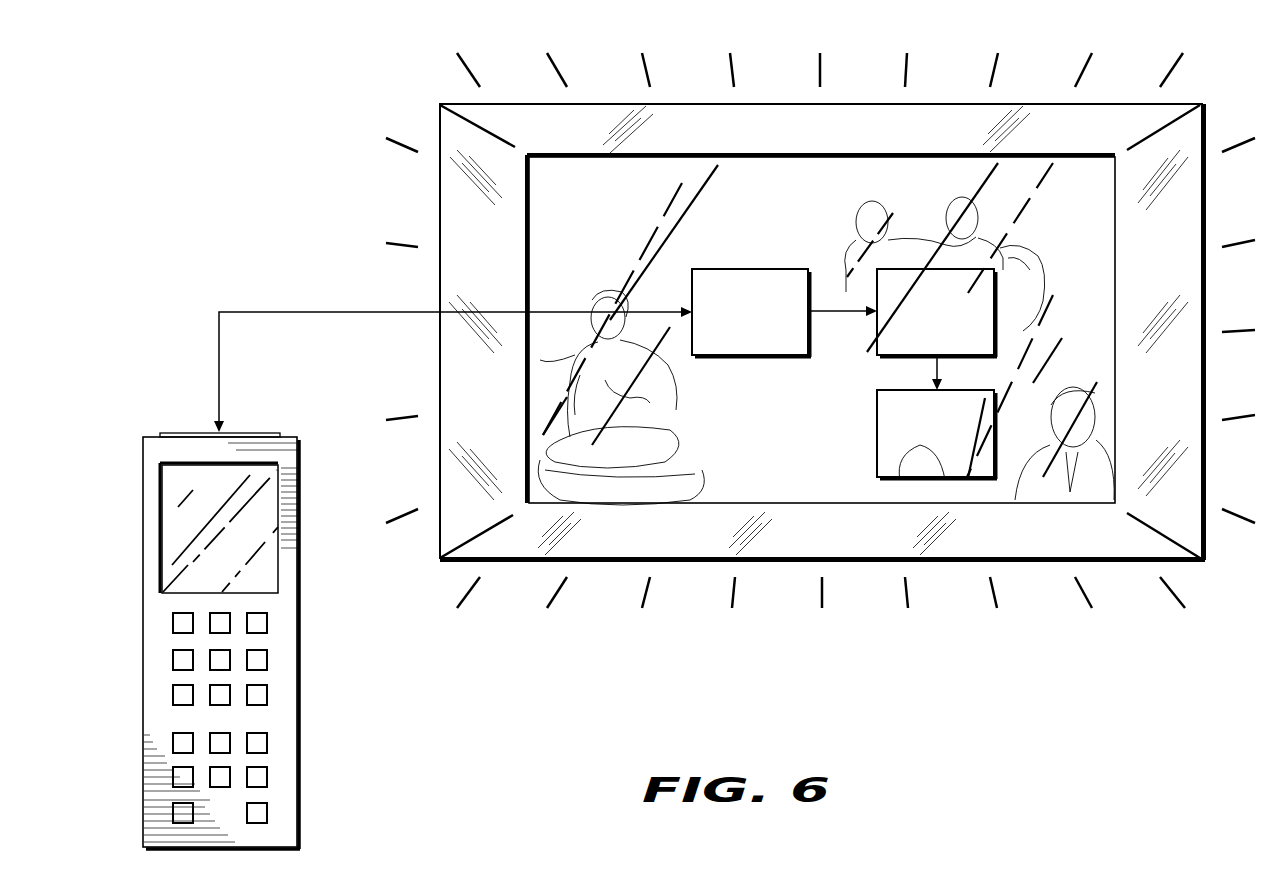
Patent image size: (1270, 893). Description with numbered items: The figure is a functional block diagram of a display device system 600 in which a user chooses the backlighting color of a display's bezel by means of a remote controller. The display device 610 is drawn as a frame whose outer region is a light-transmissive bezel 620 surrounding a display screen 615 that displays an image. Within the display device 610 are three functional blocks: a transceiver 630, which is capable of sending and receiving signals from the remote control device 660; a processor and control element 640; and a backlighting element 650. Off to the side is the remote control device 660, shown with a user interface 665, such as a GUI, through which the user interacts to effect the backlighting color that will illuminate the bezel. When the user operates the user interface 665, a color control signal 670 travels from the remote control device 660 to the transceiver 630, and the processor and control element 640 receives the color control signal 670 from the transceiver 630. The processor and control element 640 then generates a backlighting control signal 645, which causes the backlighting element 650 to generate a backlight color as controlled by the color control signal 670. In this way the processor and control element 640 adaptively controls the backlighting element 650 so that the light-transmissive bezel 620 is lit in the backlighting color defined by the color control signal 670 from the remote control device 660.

The system 600 is at (998, 800).
The display device 610 is at (800, 540).
The display screen 615 is at (600, 177).
The light-transmissive bezel 620 is at (1107, 553).
The transceiver 630 is at (750, 268).
The processor and control element 640 is at (881, 358).
The backlighting control signal 645 is at (935, 367).
The backlighting element 650 is at (877, 437).
The remote control device 660 is at (300, 662).
The user interface 665 is at (263, 567).
The color control signal 670 is at (219, 369).